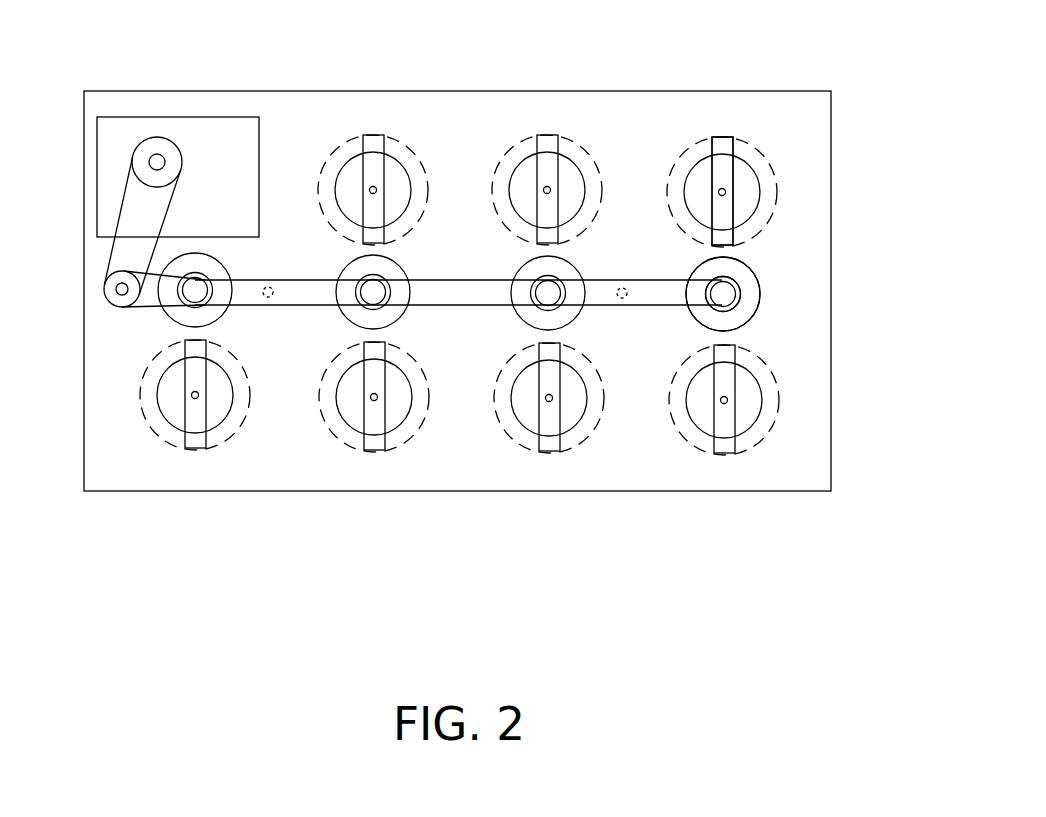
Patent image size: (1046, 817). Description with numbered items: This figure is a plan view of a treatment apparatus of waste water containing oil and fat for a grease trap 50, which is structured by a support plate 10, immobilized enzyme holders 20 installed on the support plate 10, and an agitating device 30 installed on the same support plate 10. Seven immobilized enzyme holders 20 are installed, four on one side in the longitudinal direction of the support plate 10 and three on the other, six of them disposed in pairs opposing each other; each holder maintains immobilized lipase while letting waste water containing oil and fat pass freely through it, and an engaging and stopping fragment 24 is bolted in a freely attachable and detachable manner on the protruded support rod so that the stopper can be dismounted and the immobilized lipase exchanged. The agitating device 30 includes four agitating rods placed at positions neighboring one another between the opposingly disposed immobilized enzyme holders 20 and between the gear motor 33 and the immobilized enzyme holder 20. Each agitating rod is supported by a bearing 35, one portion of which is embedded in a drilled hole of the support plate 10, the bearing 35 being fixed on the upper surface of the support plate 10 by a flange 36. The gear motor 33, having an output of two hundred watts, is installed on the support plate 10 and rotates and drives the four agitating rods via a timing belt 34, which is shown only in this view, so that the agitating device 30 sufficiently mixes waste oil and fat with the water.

The treatment apparatus of waste water containing oil and fat for a grease trap 50 is at (470, 56).
The support plate 10 is at (433, 110).
The gear motor 33 is at (220, 128).
The timing belt 34 is at (304, 281).
The agitating device 30 is at (177, 308).
The bearing 35 is at (737, 283).
The flange 36 is at (750, 310).
The engaging and stopping fragment 24 is at (722, 160).
The immobilized enzyme holder 20 is at (353, 132).